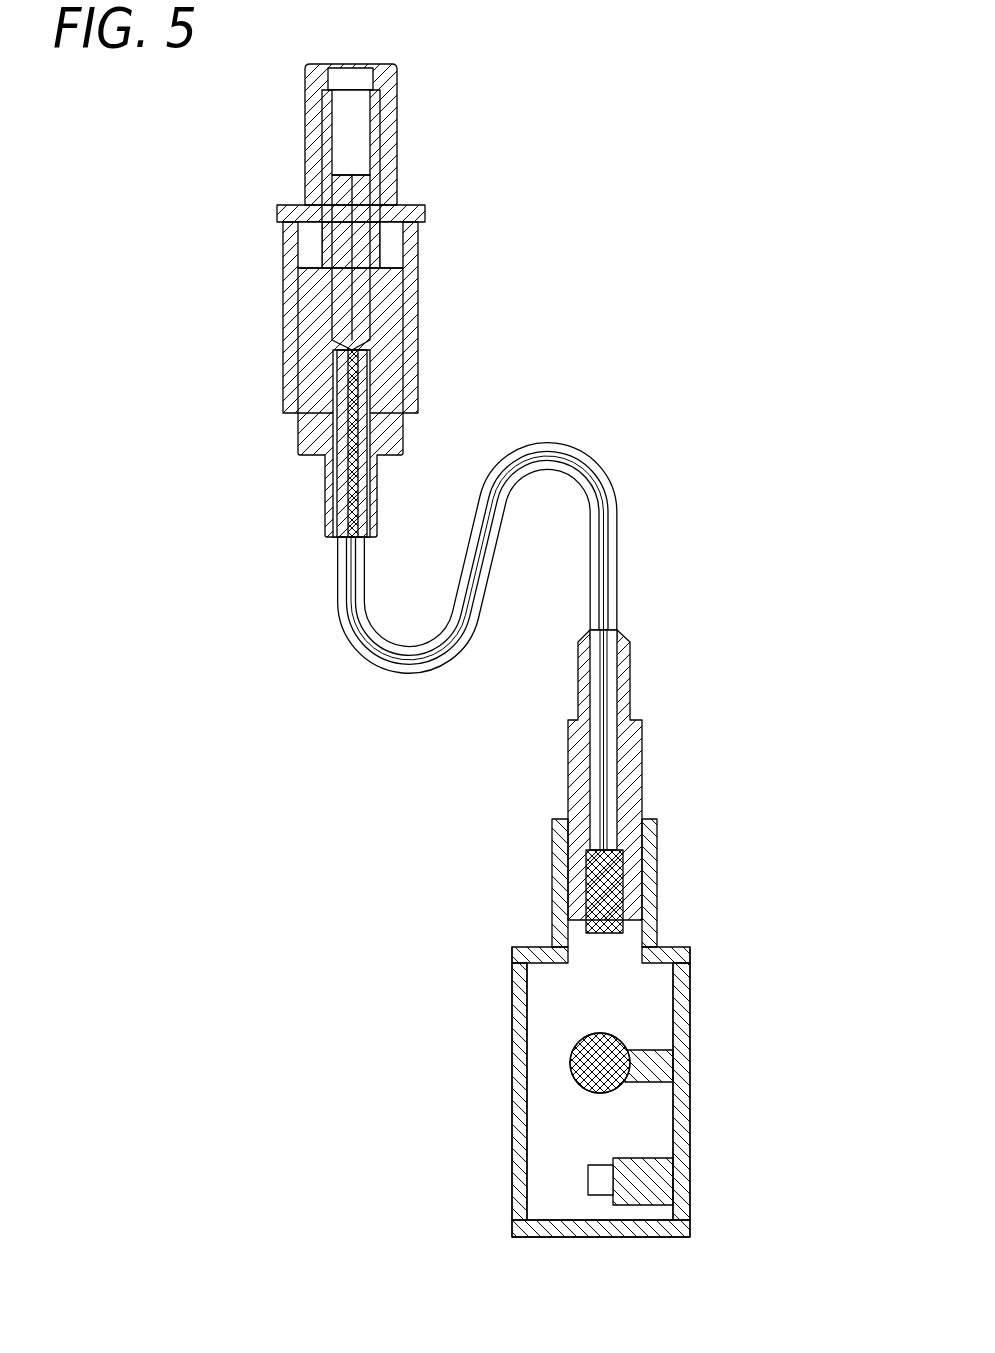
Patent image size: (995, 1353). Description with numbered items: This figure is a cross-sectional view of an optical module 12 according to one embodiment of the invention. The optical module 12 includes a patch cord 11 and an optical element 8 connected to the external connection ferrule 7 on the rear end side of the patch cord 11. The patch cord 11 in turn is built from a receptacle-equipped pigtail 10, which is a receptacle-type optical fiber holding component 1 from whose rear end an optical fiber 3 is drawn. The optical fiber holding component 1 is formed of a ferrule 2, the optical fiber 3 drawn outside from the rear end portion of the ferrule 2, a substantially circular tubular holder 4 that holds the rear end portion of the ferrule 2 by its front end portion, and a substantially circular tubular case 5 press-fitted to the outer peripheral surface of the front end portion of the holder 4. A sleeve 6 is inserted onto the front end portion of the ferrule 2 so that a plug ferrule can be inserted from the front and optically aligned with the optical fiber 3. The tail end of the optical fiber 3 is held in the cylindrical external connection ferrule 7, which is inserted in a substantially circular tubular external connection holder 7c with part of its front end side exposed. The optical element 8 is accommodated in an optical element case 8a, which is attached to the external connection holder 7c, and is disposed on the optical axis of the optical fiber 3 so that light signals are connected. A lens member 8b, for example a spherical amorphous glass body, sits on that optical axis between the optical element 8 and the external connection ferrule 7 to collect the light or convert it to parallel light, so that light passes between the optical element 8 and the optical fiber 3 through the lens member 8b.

The optical fiber holding component 1 is at (300, 415).
The ferrule 2 is at (373, 292).
The optical fiber 3 is at (373, 392).
The holder 4 is at (288, 331).
The case 5 is at (383, 157).
The sleeve 6 is at (290, 224).
The external connection ferrule 7 is at (645, 855).
The external connection holder 7c is at (643, 763).
The optical element 8 is at (597, 1182).
The optical element case 8a is at (515, 1075).
The lens member 8b is at (600, 1062).
The receptacle-equipped pigtail 10 is at (294, 759).
The patch cord 11 is at (289, 883).
The optical module 12 is at (684, 365).